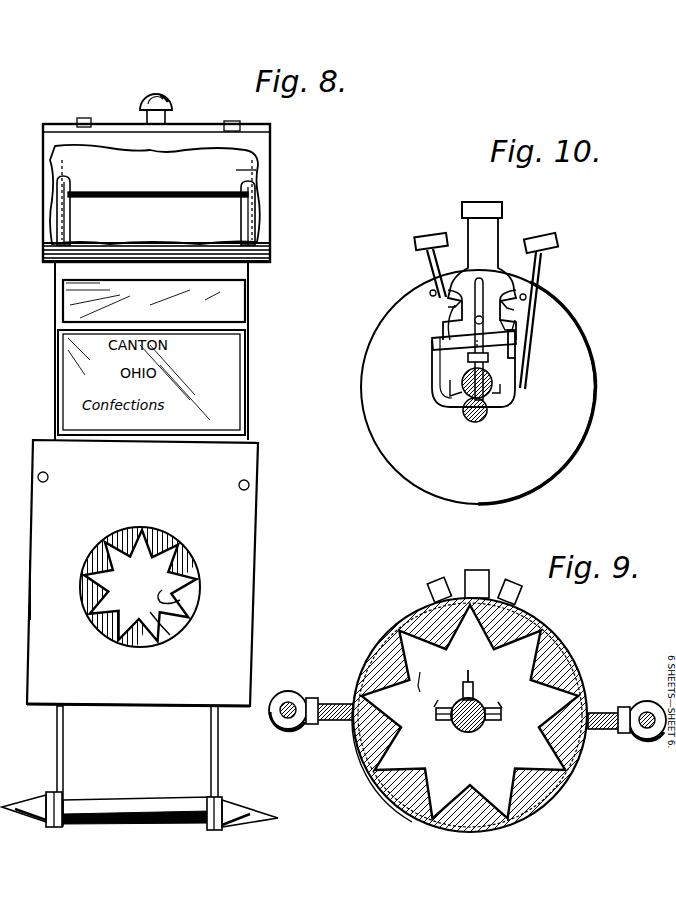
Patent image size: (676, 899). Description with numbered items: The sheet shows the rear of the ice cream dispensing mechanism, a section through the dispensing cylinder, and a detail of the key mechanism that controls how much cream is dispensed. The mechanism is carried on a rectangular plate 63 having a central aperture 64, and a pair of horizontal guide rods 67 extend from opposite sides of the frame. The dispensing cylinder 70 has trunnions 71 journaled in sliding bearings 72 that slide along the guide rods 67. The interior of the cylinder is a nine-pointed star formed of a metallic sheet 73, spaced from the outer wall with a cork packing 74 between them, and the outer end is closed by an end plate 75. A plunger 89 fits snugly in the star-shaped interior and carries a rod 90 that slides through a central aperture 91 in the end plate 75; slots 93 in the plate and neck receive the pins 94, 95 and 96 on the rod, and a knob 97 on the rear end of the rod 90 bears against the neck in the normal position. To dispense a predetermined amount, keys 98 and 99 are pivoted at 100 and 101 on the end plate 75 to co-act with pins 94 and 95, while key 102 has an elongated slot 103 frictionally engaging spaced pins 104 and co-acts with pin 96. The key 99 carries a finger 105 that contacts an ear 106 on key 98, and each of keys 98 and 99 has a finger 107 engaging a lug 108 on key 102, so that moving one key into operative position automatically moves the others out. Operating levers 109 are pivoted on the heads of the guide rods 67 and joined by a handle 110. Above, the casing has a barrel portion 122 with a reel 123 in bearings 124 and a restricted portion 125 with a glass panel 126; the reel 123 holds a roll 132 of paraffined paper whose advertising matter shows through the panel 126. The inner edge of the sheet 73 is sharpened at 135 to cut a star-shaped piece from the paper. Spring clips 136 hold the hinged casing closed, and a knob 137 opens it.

In FIG. 8, the rectangular plate 63 is at (252, 498).
In FIG. 8, the central aperture 64 is at (185, 563).
In FIG. 9, the guide rods 67 is at (290, 730).
In FIG. 10, the dispensing cylinder 70 is at (594, 357).
In FIG. 9, the dispensing cylinder 70 is at (405, 625).
In FIG. 9, the trunnions 71 is at (336, 702).
In FIG. 9, the sliding bearings 72 is at (287, 691).
In FIG. 8, the metallic sheet 73 is at (180, 605).
In FIG. 9, the metallic sheet 73 is at (560, 640).
In FIG. 9, the packing 74 is at (382, 650).
In FIG. 10, the end plate 75 is at (594, 390).
In FIG. 9, the end plate 75 is at (430, 682).
In FIG. 8, the plunger 89 is at (172, 636).
In FIG. 10, the rod 90 is at (488, 418).
In FIG. 9, the rod 90 is at (475, 730).
In FIG. 9, the central aperture 91 is at (474, 688).
In FIG. 9, the slots 93 is at (468, 670).
In FIG. 10, the pin 94 is at (500, 398).
In FIG. 9, the pin 94 is at (438, 713).
In FIG. 10, the pin 95 is at (462, 412).
In FIG. 9, the pin 95 is at (501, 710).
In FIG. 10, the pin 96 is at (493, 382).
In FIG. 9, the pin 96 is at (484, 673).
In FIG. 8, the knob 97 is at (30, 590).
In FIG. 10, the key 98 is at (540, 268).
In FIG. 9, the key 98 is at (442, 582).
In FIG. 10, the key 99 is at (432, 290).
In FIG. 9, the key 99 is at (520, 596).
In FIG. 10, the pivot 100 is at (525, 303).
In FIG. 10, the pivot 101 is at (450, 330).
In FIG. 10, the key 102 is at (500, 228).
In FIG. 9, the key 102 is at (478, 578).
In FIG. 10, the elongated slot 103 is at (398, 250).
In FIG. 10, the spaced pins 104 is at (433, 368).
In FIG. 10, the finger 105 is at (506, 345).
In FIG. 10, the ear 106 is at (520, 332).
In FIG. 10, the finger 107 is at (525, 292).
In FIG. 10, the lug 108 is at (422, 235).
In FIG. 8, the operating levers 109 is at (212, 728).
In FIG. 8, the handle 110 is at (130, 803).
In FIG. 8, the barrel portion 122 is at (268, 147).
In FIG. 8, the reel 123 is at (175, 184).
In FIG. 8, the bearings 124 is at (70, 205).
In FIG. 8, the restricted portion 125 is at (228, 298).
In FIG. 8, the glass panel 126 is at (258, 293).
In FIG. 8, the roll of paraffined paper 132 is at (258, 170).
In FIG. 8, the sharpened edge 135 is at (168, 590).
In FIG. 8, the spring clips 136 is at (86, 118).
In FIG. 8, the knob 137 is at (174, 104).